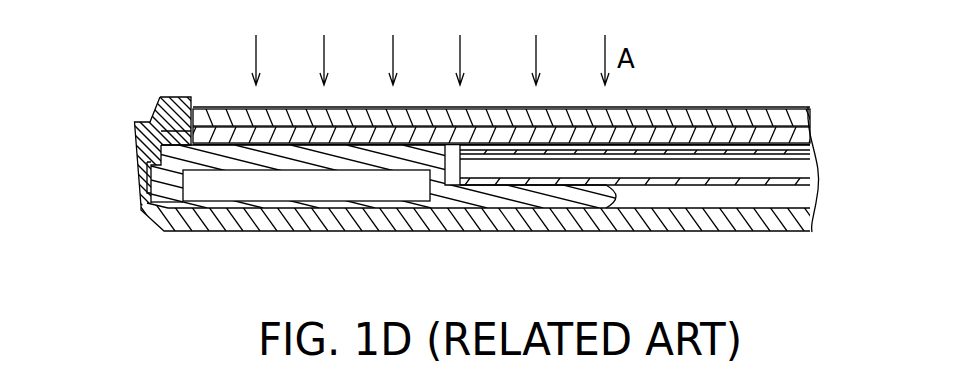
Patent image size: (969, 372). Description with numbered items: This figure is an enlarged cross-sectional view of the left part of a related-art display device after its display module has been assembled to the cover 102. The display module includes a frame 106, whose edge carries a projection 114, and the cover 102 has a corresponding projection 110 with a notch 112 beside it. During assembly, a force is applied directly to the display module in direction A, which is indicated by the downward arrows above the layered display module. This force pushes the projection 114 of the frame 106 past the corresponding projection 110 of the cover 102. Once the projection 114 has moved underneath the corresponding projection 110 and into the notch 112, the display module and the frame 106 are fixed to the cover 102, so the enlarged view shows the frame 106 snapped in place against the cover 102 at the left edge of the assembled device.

The cover 102 is at (512, 218).
The frame 106 is at (220, 162).
The projection 110 is at (147, 148).
The notch 112 is at (143, 193).
The projection 114 is at (145, 180).